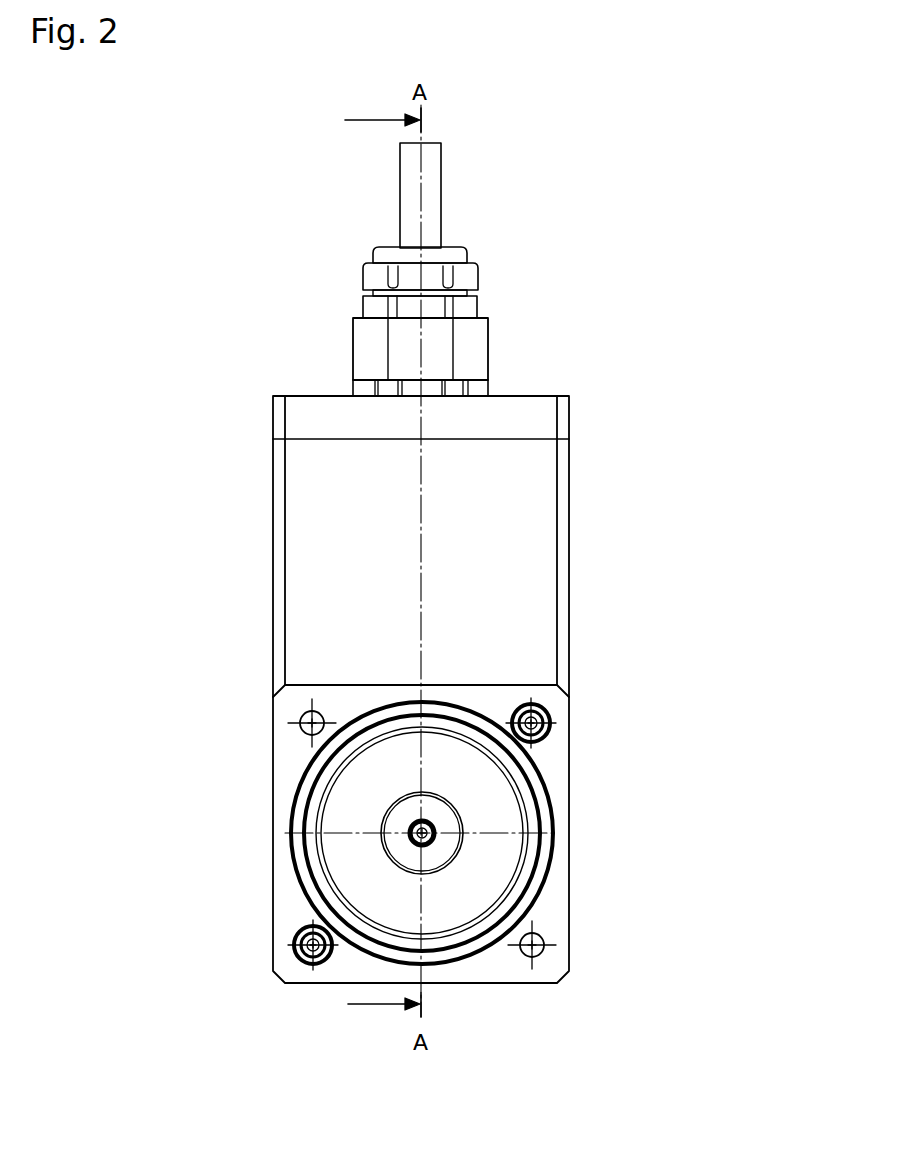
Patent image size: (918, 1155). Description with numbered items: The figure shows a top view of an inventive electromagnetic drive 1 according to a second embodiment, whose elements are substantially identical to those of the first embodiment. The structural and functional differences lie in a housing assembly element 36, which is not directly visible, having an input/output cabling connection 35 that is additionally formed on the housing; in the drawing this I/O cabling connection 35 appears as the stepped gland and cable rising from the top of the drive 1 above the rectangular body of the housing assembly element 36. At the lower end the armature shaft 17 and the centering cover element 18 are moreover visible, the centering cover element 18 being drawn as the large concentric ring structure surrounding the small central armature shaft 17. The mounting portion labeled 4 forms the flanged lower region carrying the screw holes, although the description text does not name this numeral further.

The electromagnetic drive 1 is at (793, 133).
The input/output cabling connection 35 is at (483, 222).
The housing assembly element 36 is at (527, 580).
The mounting flange 4 is at (558, 750).
The armature shaft 17 is at (432, 827).
The centering cover element 18 is at (483, 871).